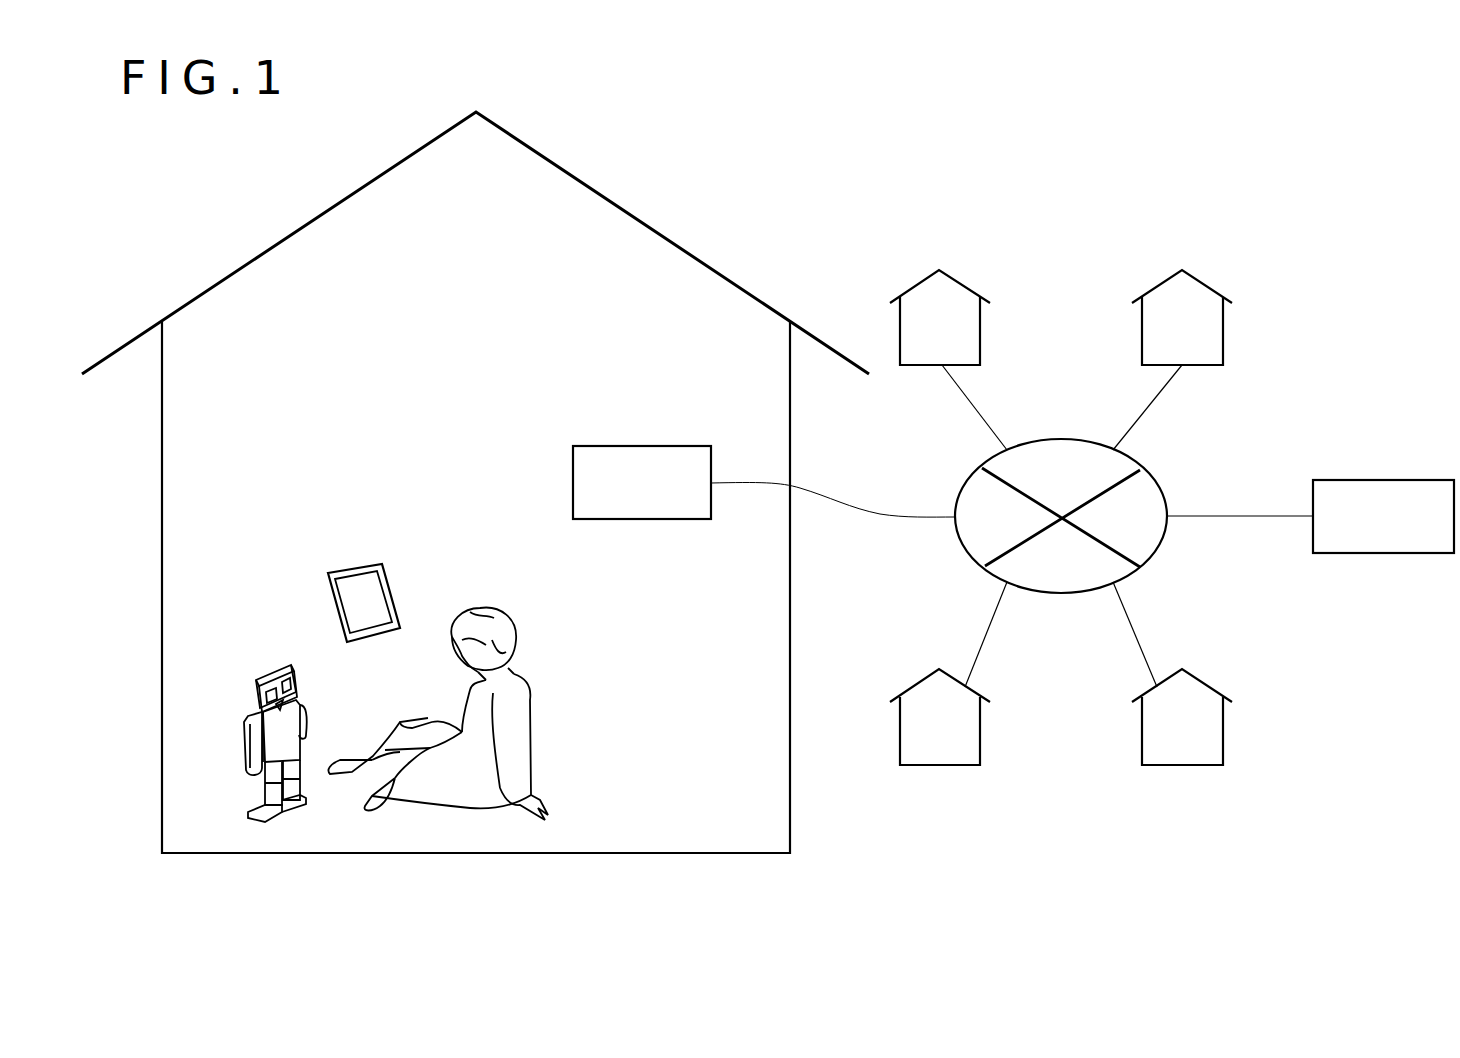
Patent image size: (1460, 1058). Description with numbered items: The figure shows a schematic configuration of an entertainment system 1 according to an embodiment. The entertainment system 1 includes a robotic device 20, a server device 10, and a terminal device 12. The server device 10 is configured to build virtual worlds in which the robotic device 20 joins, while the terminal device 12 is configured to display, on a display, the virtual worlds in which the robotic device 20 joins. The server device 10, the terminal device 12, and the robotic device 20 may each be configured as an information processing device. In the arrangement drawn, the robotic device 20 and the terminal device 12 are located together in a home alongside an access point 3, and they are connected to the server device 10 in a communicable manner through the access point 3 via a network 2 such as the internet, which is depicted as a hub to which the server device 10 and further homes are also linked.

The entertainment system 1 is at (768, 942).
The network 2 is at (1061, 440).
The access point 3 is at (642, 446).
The server device 10 is at (1386, 480).
The terminal device 12 is at (355, 567).
The robotic device 20 is at (278, 674).